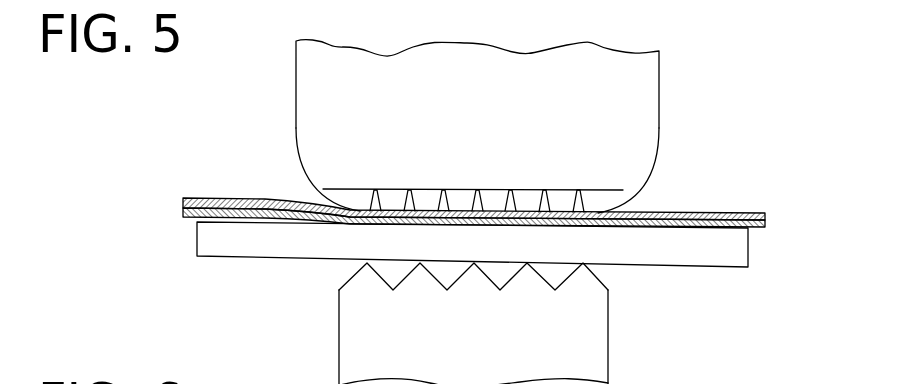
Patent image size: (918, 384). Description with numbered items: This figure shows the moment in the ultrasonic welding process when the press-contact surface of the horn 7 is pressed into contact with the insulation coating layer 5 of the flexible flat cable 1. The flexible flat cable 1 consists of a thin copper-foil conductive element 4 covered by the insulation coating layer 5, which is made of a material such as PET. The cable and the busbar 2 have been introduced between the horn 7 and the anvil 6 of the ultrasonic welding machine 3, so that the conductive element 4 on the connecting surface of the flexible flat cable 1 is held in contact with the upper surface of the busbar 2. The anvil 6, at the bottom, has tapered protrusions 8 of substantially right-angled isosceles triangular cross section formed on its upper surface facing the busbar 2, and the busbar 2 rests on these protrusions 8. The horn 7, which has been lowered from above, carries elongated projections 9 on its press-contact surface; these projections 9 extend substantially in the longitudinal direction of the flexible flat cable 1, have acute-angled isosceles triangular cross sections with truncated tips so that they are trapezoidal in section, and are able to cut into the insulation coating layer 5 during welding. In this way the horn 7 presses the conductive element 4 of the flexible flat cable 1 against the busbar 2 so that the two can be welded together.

The flexible flat cable 1 is at (474, 234).
The busbar 2 is at (690, 267).
The ultrasonic welding machine 3 is at (484, 126).
The conductive element 4 is at (340, 219).
The insulation coating layer 5 is at (474, 209).
The anvil 6 is at (497, 323).
The horn 7 is at (305, 82).
The tapered protrusions 8 is at (527, 289).
The elongated projections 9 is at (458, 195).